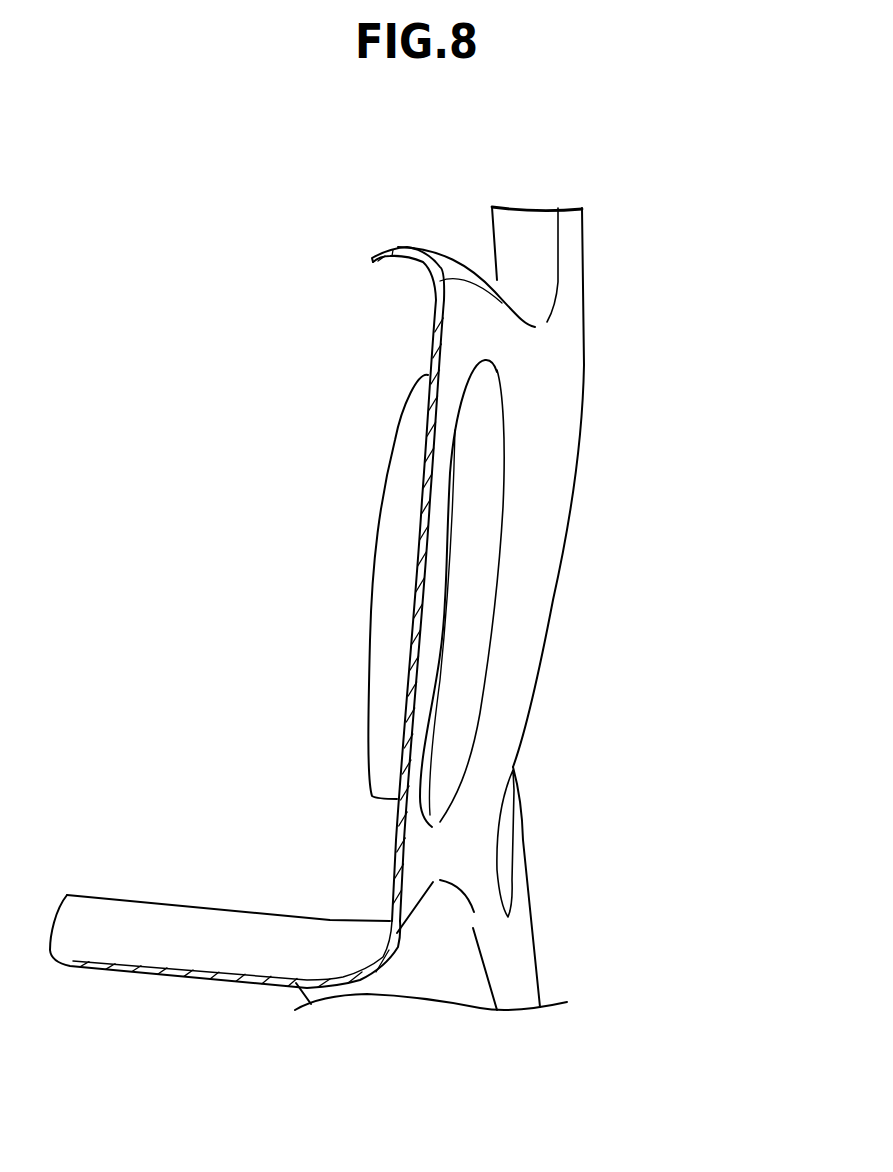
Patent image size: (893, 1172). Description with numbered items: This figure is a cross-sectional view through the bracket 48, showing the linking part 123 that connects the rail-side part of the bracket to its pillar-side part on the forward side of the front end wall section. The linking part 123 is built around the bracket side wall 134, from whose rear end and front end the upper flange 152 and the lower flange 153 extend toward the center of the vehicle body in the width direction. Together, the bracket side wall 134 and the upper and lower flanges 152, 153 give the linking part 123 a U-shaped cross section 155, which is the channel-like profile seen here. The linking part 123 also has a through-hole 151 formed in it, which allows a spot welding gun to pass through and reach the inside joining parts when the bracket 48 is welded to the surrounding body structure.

The bracket 48 is at (238, 190).
The upper flange 152 is at (410, 262).
The lower flange 153 is at (185, 977).
The U-shaped cross section 155 is at (407, 647).
The linking part 123 is at (597, 367).
The bracket side wall 134 is at (553, 410).
The through-hole 151 is at (440, 585).